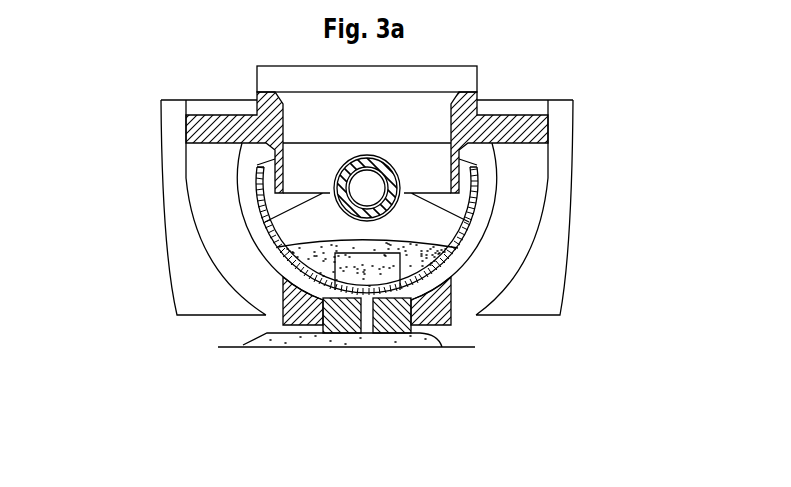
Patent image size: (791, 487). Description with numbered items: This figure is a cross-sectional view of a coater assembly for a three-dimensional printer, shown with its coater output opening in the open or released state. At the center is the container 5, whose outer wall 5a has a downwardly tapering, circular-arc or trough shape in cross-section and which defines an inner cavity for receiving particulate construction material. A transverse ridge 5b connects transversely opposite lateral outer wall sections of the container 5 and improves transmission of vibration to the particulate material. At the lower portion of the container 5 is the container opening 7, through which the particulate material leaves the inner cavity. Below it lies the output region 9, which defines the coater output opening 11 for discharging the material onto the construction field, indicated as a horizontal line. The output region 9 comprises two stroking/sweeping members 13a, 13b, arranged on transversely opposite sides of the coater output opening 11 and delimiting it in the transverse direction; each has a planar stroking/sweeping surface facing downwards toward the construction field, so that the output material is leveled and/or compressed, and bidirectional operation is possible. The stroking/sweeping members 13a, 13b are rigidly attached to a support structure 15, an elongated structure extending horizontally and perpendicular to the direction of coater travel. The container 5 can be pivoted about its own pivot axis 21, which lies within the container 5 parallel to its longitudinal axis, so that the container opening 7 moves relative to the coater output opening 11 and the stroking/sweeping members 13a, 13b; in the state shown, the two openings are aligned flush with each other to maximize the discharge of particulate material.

The container 5 is at (473, 243).
The outer wall 5a is at (480, 220).
The transverse ridge 5b is at (437, 237).
The container opening 7 is at (364, 293).
The output region 9 is at (358, 380).
The coater output opening 11 is at (367, 325).
The stroking/sweeping member 13a is at (345, 322).
The stroking/sweeping member 13b is at (397, 323).
The support structure 15 is at (177, 207).
The pivot axis 21 is at (387, 160).